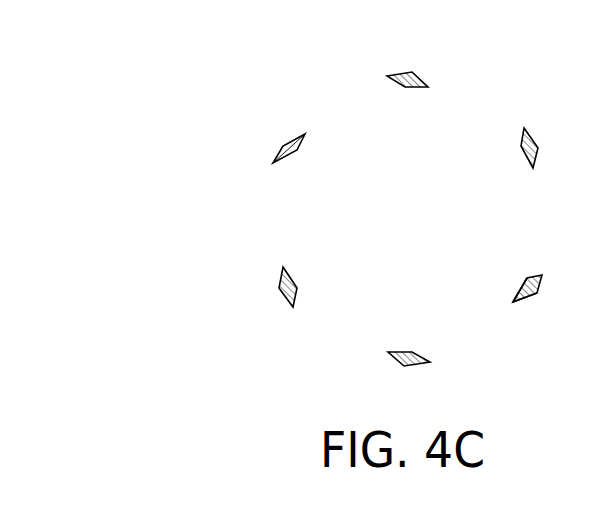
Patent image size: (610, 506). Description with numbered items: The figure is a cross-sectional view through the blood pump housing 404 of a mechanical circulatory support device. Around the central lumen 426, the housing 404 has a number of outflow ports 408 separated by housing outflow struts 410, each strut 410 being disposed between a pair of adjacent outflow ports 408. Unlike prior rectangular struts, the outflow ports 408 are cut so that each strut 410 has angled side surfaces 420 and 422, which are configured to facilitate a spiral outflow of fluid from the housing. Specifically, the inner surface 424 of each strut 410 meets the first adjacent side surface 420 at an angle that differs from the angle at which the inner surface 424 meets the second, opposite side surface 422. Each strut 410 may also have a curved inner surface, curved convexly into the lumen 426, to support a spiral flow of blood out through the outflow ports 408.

The blood pump housing 404 is at (210, 103).
The outflow port 408 is at (470, 108).
The housing outflow strut 410 is at (411, 78).
The first angled side surface 420 is at (538, 276).
The second angled side surface 422 is at (525, 300).
The inner surface 424 is at (518, 295).
The lumen 426 is at (423, 229).